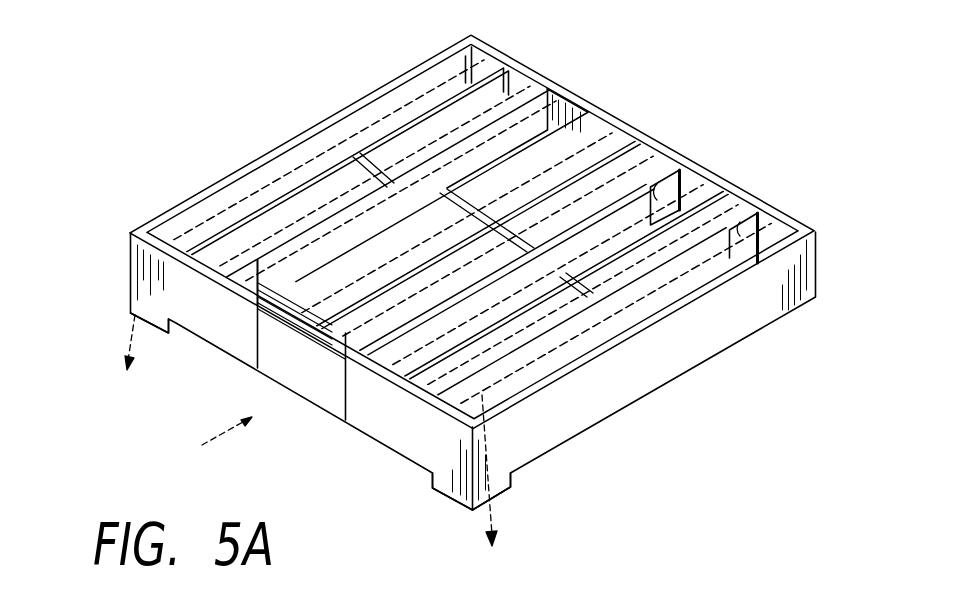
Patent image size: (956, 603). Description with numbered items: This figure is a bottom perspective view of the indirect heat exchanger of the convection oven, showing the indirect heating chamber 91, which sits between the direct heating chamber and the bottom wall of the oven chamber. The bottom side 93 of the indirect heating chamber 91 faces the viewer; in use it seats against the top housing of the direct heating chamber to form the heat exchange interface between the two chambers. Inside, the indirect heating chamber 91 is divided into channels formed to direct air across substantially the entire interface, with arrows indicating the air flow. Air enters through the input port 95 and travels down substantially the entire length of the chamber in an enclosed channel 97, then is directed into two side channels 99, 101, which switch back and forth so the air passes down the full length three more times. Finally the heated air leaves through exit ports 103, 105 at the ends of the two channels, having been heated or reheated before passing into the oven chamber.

The indirect heating chamber 91 is at (278, 125).
The bottom side 93 is at (615, 128).
The input port 95 is at (342, 388).
The enclosed channel 97 is at (327, 297).
The side channel 99 is at (700, 185).
The side channel 101 is at (570, 107).
The exit port 103 is at (505, 505).
The exit port 105 is at (118, 322).